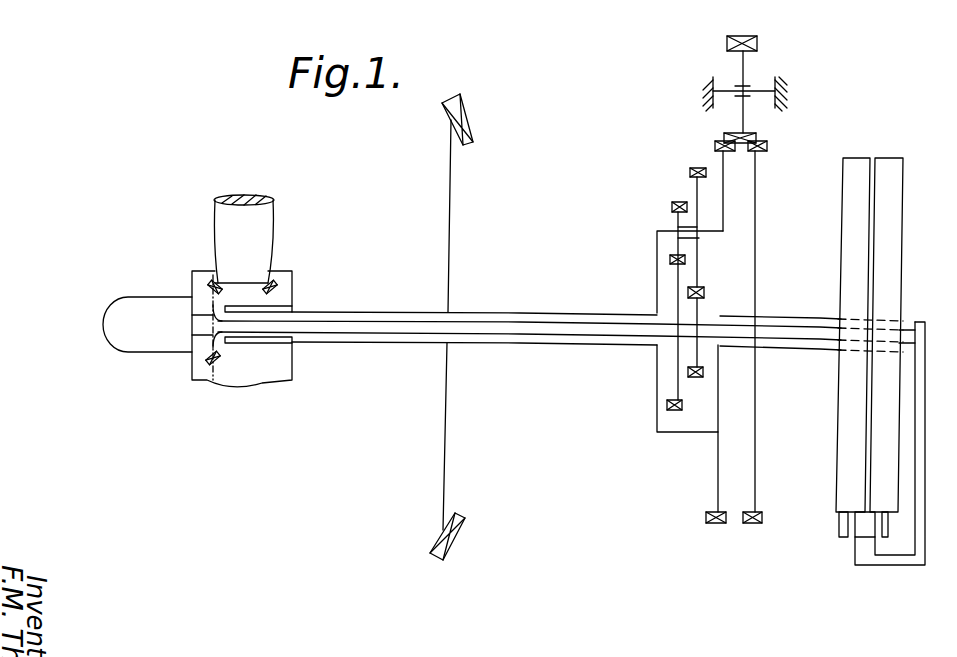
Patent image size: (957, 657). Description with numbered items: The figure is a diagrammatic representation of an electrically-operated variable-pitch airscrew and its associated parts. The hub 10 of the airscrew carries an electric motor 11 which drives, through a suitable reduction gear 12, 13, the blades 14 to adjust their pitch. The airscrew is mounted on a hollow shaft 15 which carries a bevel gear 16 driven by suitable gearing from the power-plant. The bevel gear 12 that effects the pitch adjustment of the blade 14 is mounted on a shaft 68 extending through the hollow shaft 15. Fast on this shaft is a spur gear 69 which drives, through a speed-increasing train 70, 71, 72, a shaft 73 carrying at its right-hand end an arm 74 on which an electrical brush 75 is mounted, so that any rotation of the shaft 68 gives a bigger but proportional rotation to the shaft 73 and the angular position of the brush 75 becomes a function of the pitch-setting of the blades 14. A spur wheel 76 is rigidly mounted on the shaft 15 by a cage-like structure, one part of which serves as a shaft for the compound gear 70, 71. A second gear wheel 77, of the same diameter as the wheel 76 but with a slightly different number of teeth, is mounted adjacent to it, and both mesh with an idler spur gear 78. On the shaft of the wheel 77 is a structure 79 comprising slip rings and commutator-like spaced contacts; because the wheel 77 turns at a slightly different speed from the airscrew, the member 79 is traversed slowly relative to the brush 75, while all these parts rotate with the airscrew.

The hub 10 is at (195, 271).
The electric motor 11 is at (146, 297).
The bevel gear 12 is at (216, 364).
The reduction gear 13 is at (275, 290).
The blades 14 is at (275, 201).
The hollow shaft 15 is at (383, 312).
The bevel gear 16 is at (446, 458).
The shaft 68 is at (368, 332).
The spur gear 69 is at (677, 275).
The speed-increasing train gear 70 is at (678, 218).
The speed-increasing train gear 71 is at (697, 250).
The speed-increasing train gear 72 is at (704, 299).
The shaft 73 is at (722, 334).
The arm 74 is at (918, 322).
The electrical brush 75 is at (862, 528).
The spur wheel 76 is at (716, 138).
The second gear wheel 77 is at (767, 146).
The idler spur gear 78 is at (744, 120).
The slip ring and contact structure 79 is at (848, 218).